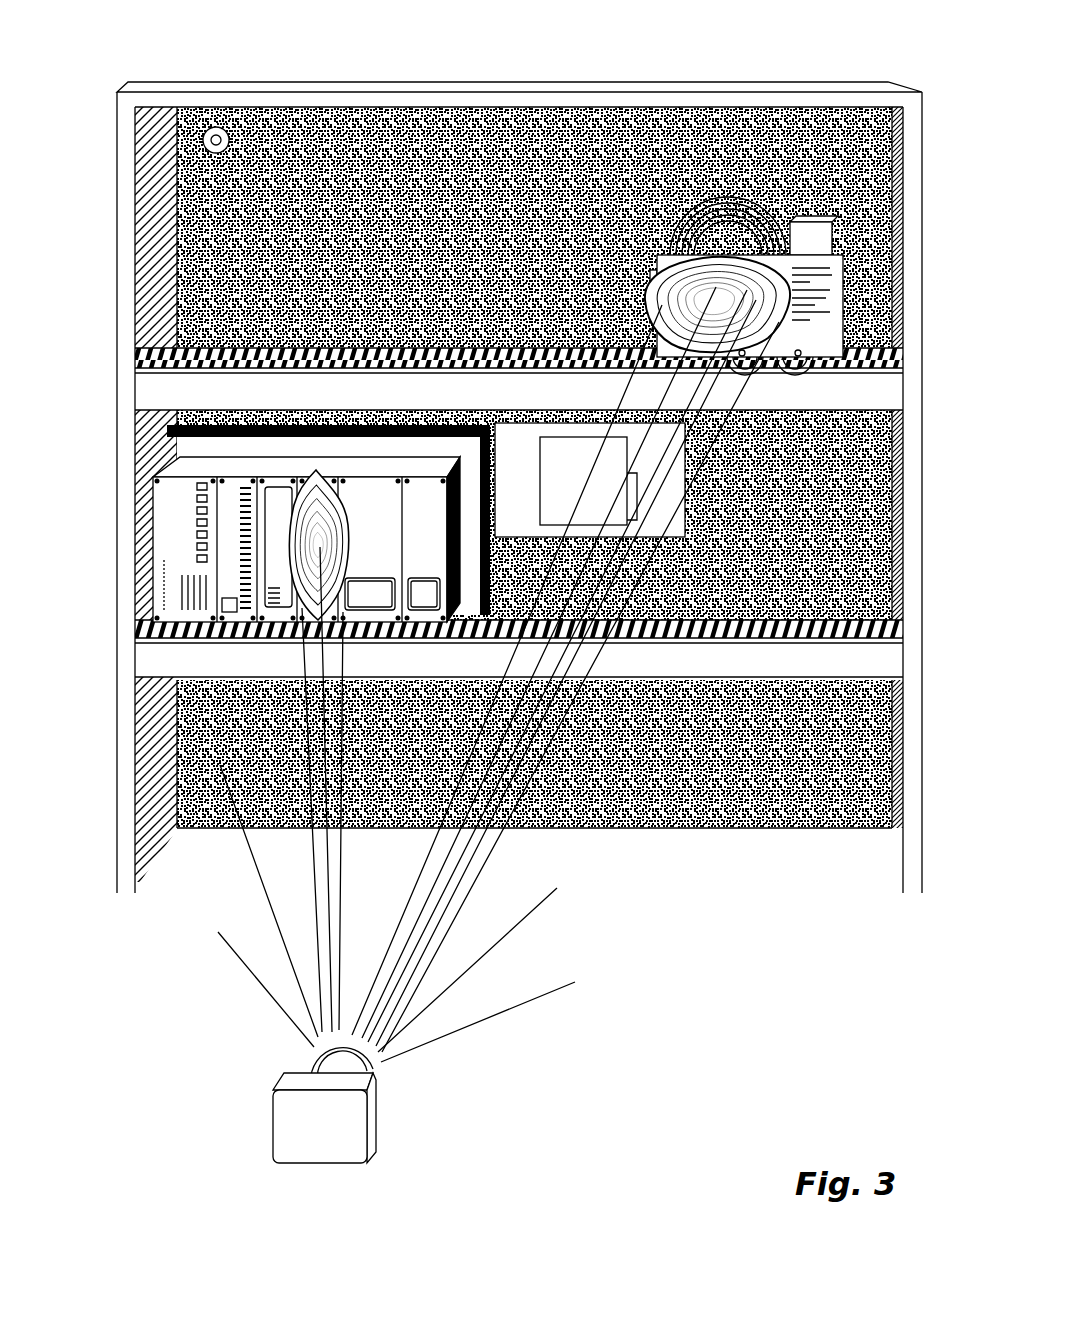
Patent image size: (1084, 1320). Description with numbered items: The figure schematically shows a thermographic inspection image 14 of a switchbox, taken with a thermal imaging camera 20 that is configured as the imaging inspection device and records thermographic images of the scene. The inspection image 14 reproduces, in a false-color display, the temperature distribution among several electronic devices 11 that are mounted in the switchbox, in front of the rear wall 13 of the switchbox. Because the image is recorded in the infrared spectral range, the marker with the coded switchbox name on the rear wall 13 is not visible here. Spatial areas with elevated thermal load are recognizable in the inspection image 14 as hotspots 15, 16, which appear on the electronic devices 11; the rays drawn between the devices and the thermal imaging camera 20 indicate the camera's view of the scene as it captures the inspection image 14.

The electronic devices 11 is at (174, 455).
The rear wall 13 is at (395, 128).
The thermographic inspection image 14 is at (126, 953).
The hotspot 15 is at (279, 562).
The hotspot 16 is at (716, 265).
The thermal imaging camera 20 is at (391, 1157).